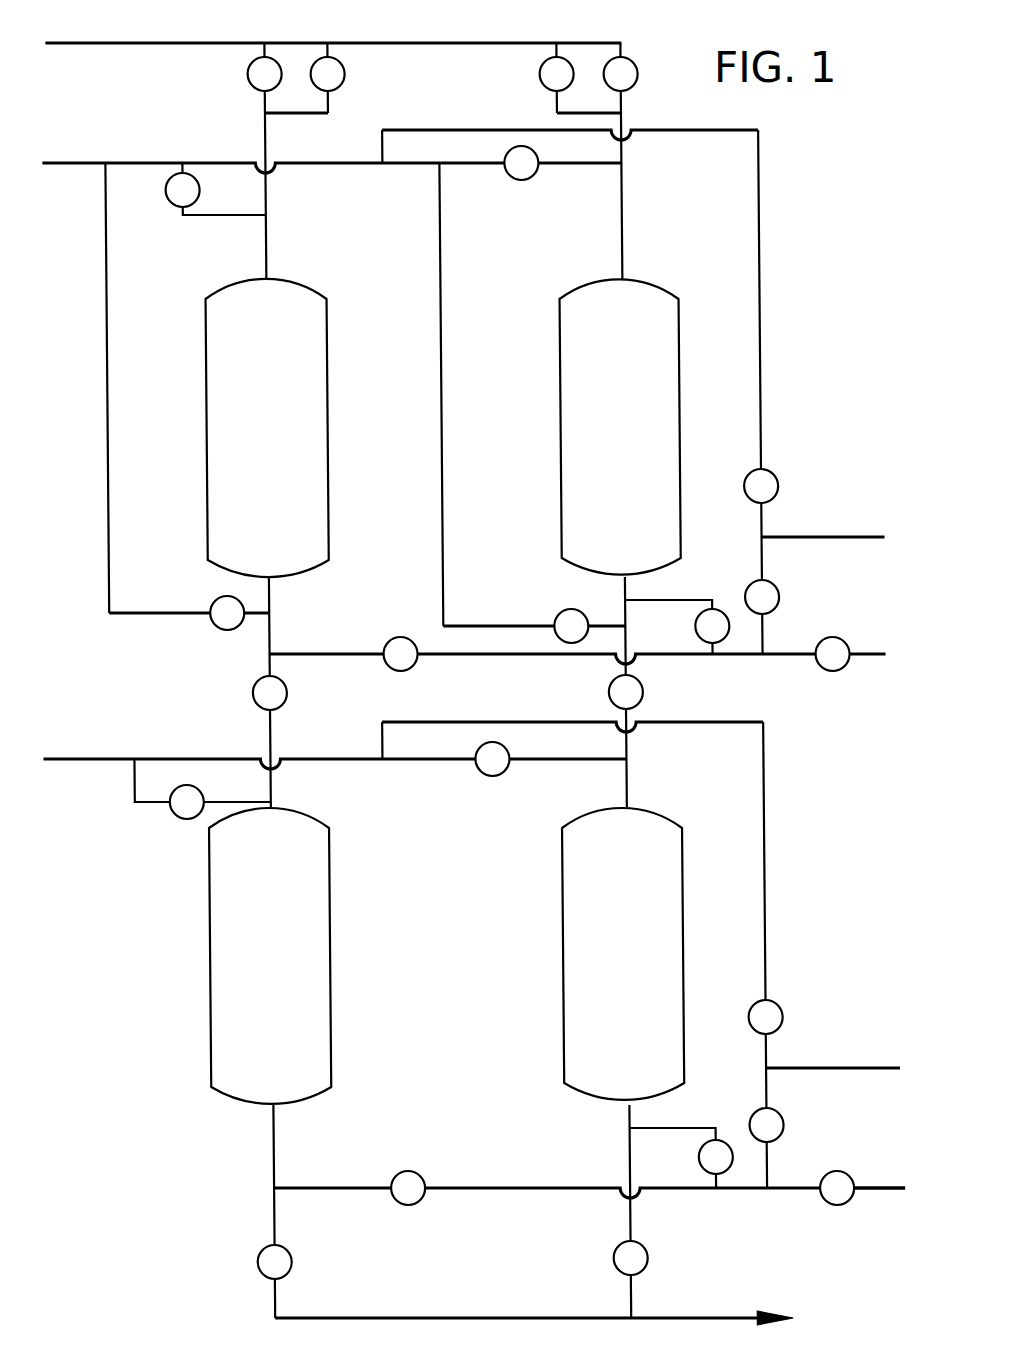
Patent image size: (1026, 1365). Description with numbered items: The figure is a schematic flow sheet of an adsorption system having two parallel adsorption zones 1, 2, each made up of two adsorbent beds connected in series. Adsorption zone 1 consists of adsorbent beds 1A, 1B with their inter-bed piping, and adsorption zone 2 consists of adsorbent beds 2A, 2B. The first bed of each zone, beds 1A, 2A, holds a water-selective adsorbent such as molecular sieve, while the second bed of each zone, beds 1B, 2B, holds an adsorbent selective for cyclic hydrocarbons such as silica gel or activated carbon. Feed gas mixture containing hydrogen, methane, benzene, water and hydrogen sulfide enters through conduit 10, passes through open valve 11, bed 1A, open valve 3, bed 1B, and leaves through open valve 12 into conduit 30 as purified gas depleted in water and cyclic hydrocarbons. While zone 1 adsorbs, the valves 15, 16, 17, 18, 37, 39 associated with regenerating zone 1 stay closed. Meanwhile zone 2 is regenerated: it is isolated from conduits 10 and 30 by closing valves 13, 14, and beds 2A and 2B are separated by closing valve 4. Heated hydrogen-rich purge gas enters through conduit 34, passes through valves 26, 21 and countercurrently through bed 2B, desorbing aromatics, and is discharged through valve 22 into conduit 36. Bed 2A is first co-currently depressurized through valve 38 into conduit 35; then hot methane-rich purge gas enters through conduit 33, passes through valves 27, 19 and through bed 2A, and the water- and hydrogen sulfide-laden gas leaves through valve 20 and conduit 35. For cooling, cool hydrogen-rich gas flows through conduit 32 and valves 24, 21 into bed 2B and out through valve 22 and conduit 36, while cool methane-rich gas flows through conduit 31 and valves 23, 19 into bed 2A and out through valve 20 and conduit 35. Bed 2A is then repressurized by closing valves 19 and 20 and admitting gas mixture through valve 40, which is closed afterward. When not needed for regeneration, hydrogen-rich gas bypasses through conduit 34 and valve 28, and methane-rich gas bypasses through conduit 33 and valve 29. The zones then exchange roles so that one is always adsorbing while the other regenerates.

The conduit 10 is at (110, 43).
The valve 11 is at (247, 78).
The valve 39 is at (340, 67).
The valve 40 is at (540, 80).
The valve 13 is at (632, 62).
The conduit 35 is at (84, 163).
The valve 16 is at (168, 205).
The valve 20 is at (519, 180).
The adsorption zone 1 is at (230, 428).
The adsorbent bed 1A is at (203, 352).
The adsorption zone 2 is at (648, 426).
The adsorbent bed 2A is at (677, 368).
The valve 29 is at (767, 478).
The conduit 33 is at (806, 537).
The valve 27 is at (765, 607).
The valve 37 is at (210, 601).
The valve 15 is at (385, 640).
The valve 38 is at (555, 612).
The valve 19 is at (687, 628).
The valve 3 is at (242, 693).
The valve 4 is at (636, 697).
The conduit 31 is at (850, 652).
The valve 23 is at (840, 665).
The conduit 36 is at (84, 735).
The valve 18 is at (171, 820).
The valve 22 is at (495, 768).
The adsorbent bed 1B is at (201, 935).
The adsorbent bed 2B is at (696, 845).
The valve 28 is at (771, 1010).
The conduit 34 is at (836, 1070).
The valve 26 is at (740, 1127).
The valve 21 is at (682, 1157).
The valve 24 is at (820, 1170).
The conduit 32 is at (865, 1188).
The valve 17 is at (400, 1205).
The valve 12 is at (252, 1249).
The valve 14 is at (627, 1258).
The conduit 30 is at (674, 1318).